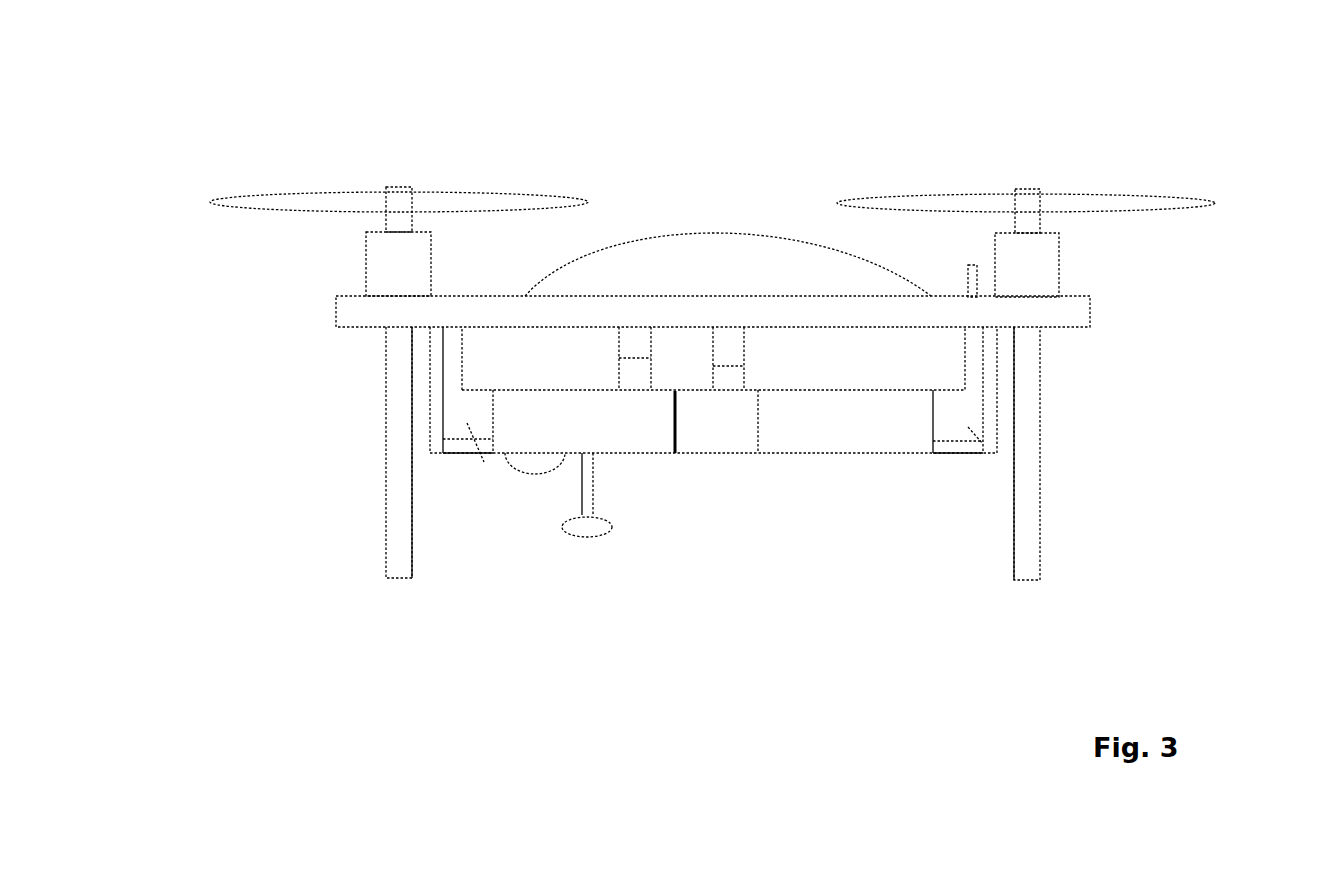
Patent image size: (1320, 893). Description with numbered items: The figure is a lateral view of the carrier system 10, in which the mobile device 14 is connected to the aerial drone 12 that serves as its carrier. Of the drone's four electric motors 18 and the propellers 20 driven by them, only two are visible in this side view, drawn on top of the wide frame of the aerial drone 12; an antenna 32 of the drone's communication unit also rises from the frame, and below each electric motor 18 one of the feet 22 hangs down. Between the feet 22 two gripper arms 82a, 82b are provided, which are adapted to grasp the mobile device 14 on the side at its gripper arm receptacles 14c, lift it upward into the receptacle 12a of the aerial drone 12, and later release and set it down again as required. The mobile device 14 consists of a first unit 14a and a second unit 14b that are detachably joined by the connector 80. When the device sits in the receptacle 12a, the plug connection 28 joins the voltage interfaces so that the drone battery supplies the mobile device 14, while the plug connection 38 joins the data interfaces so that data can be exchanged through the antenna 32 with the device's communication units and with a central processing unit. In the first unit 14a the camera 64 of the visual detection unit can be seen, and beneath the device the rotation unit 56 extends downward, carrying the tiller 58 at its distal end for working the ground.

The carrier system 10 is at (767, 674).
The aerial drone 12 is at (1093, 330).
The receptacle 12a is at (677, 359).
The mobile device 14 is at (873, 453).
The first unit 14a is at (592, 390).
The second unit 14b is at (835, 390).
The gripper arm receptacle 14c is at (493, 438).
The electric motor 18 is at (398, 258).
The propeller 20 is at (455, 202).
The feet 22 is at (400, 500).
The plug connection 28 is at (676, 455).
The antenna 32 is at (968, 268).
The plug connection 38 is at (746, 375).
The rotation unit 56 is at (587, 479).
The tiller 58 is at (588, 527).
The camera 64 is at (540, 473).
The connector 80 is at (760, 417).
The gripper arm 82a is at (467, 423).
The gripper arm 82b is at (968, 427).